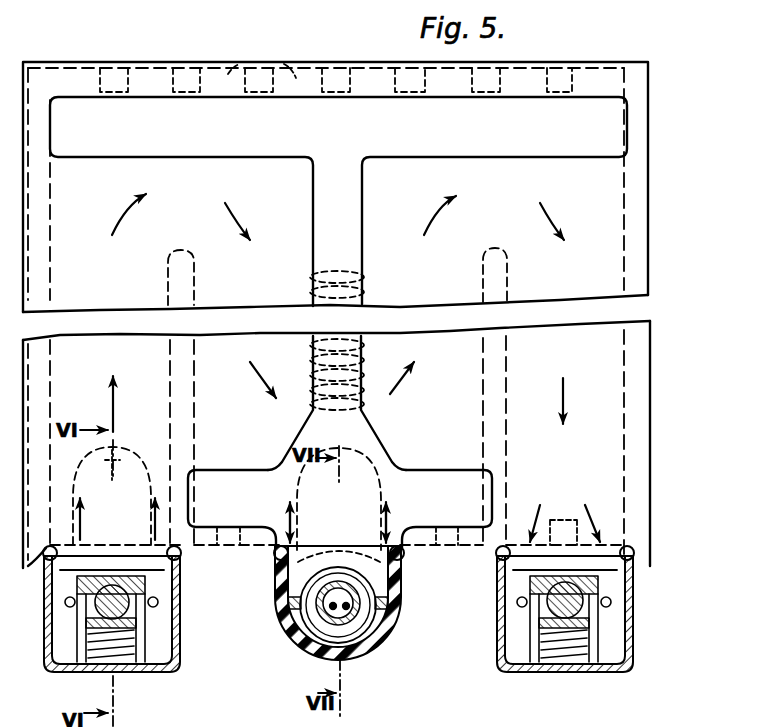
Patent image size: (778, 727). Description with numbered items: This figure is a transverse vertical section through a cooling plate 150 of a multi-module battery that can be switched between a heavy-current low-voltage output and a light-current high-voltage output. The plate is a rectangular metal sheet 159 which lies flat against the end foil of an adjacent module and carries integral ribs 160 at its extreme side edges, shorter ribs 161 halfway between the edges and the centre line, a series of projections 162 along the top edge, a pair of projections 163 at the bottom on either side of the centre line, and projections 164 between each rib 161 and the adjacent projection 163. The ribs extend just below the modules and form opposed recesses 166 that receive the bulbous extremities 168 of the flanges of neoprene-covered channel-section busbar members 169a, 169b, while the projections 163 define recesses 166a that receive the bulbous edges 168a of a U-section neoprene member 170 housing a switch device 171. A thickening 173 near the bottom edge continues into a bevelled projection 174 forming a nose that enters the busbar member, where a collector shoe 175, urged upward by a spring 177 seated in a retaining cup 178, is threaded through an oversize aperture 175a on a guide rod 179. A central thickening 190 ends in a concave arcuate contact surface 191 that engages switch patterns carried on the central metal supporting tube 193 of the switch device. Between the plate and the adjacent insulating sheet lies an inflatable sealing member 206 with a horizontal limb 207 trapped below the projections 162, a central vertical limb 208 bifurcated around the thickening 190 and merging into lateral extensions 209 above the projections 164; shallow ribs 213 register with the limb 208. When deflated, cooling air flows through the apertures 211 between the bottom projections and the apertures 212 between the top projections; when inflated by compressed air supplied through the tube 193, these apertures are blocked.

The cooling plate 150 is at (48, 97).
The projections 162 is at (116, 80).
The rectangular metal sheet 159 is at (135, 168).
The apertures 212 is at (225, 80).
The horizontal limb 207 is at (297, 112).
The inflatable sealing member 206 is at (350, 220).
The central vertical limb 208 is at (325, 262).
The shallow ribs 213 is at (377, 366).
The thickening 190 is at (383, 448).
The lateral extensions 209 is at (236, 472).
The ribs 160 is at (62, 394).
The ribs 161 is at (190, 396).
The thickening 173 is at (130, 472).
The projections 163 is at (338, 505).
The apertures 211 is at (224, 532).
The bulbous edges 168a is at (414, 528).
The guide rod 179 is at (52, 664).
The recesses 166 is at (60, 560).
The bulbous extremities 168 is at (60, 558).
The bevelled projection 174 is at (172, 590).
The collector shoe 175 is at (142, 612).
The longitudinal aperture 175a is at (160, 630).
The spring 177 is at (98, 670).
The retaining cup 178 is at (154, 693).
The busbar member 169a is at (176, 670).
The projections 164 is at (192, 582).
The neoprene member 170 is at (360, 672).
The switch device 171 is at (360, 630).
The concave arcuate contact surface 191 is at (414, 582).
The central metal supporting tube 193 is at (322, 643).
The recesses 166a is at (404, 552).
The busbar member 169b is at (508, 670).